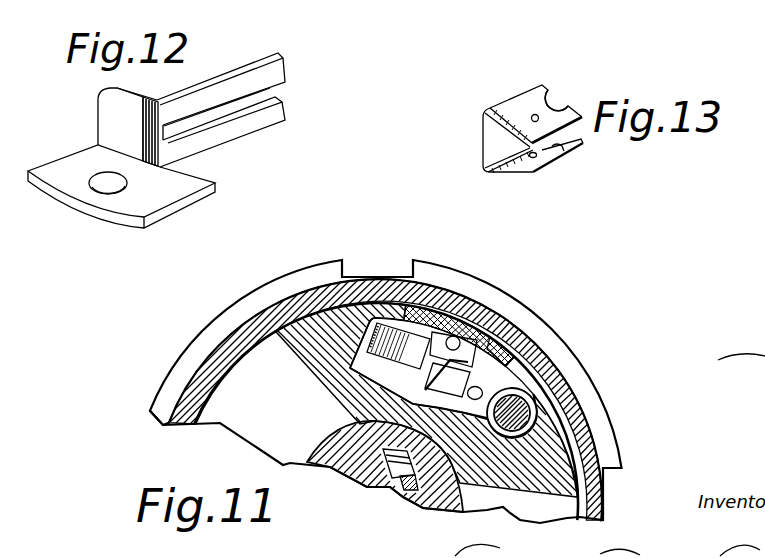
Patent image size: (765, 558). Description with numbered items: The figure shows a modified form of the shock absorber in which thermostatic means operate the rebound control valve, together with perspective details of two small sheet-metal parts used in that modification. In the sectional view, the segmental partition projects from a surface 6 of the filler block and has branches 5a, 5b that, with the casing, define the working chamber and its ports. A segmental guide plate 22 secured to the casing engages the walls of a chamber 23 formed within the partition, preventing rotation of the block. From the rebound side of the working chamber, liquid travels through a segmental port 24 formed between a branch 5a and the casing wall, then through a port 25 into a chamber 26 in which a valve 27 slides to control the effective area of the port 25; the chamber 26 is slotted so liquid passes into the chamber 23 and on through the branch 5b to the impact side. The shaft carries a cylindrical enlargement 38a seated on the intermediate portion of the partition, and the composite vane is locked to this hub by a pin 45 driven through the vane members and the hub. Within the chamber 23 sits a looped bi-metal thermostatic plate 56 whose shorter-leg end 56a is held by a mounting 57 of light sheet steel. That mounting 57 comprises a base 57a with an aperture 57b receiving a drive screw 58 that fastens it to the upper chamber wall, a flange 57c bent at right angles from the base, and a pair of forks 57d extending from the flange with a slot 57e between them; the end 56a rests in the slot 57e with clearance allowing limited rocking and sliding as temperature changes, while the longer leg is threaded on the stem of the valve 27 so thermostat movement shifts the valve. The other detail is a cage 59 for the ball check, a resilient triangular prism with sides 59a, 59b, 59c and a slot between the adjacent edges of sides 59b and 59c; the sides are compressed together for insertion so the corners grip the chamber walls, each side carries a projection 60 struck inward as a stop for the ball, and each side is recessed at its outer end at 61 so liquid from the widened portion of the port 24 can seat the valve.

In FIG. 12, the mounting 57 is at (98, 123).
In FIG. 11, the mounting 57 is at (479, 356).
In FIG. 12, the base 57a is at (160, 197).
In FIG. 12, the aperture 57b is at (112, 190).
In FIG. 12, the flange 57c is at (131, 110).
In FIG. 12, the forks 57d is at (272, 77).
In FIG. 12, the slot 57e is at (210, 113).
In FIG. 13, the cage 59 is at (478, 130).
In FIG. 13, the side of cage 59a is at (492, 145).
In FIG. 13, the side of cage 59b is at (518, 103).
In FIG. 13, the side of cage 59c is at (515, 170).
In FIG. 13, the projection 60 is at (532, 118).
In FIG. 13, the recess 61 is at (552, 112).
In FIG. 13, the surface 6 is at (559, 148).
In FIG. 11, the branch of partition 5a is at (557, 457).
In FIG. 11, the branch of partition 5b is at (310, 366).
In FIG. 11, the segmental guide plate 22 is at (500, 333).
In FIG. 11, the chamber 23 is at (450, 331).
In FIG. 11, the segmental port 24 is at (563, 432).
In FIG. 11, the port 25 is at (538, 395).
In FIG. 11, the chamber 26 is at (530, 383).
In FIG. 11, the valve 27 is at (517, 425).
In FIG. 11, the cylindrical enlargement 38a is at (327, 443).
In FIG. 11, the pin 45 is at (388, 480).
In FIG. 11, the looped bi-metal thermostatic plate 56 is at (386, 318).
In FIG. 11, the end of thermostatic plate 56a is at (450, 375).
In FIG. 11, the drive screw 58 is at (470, 310).